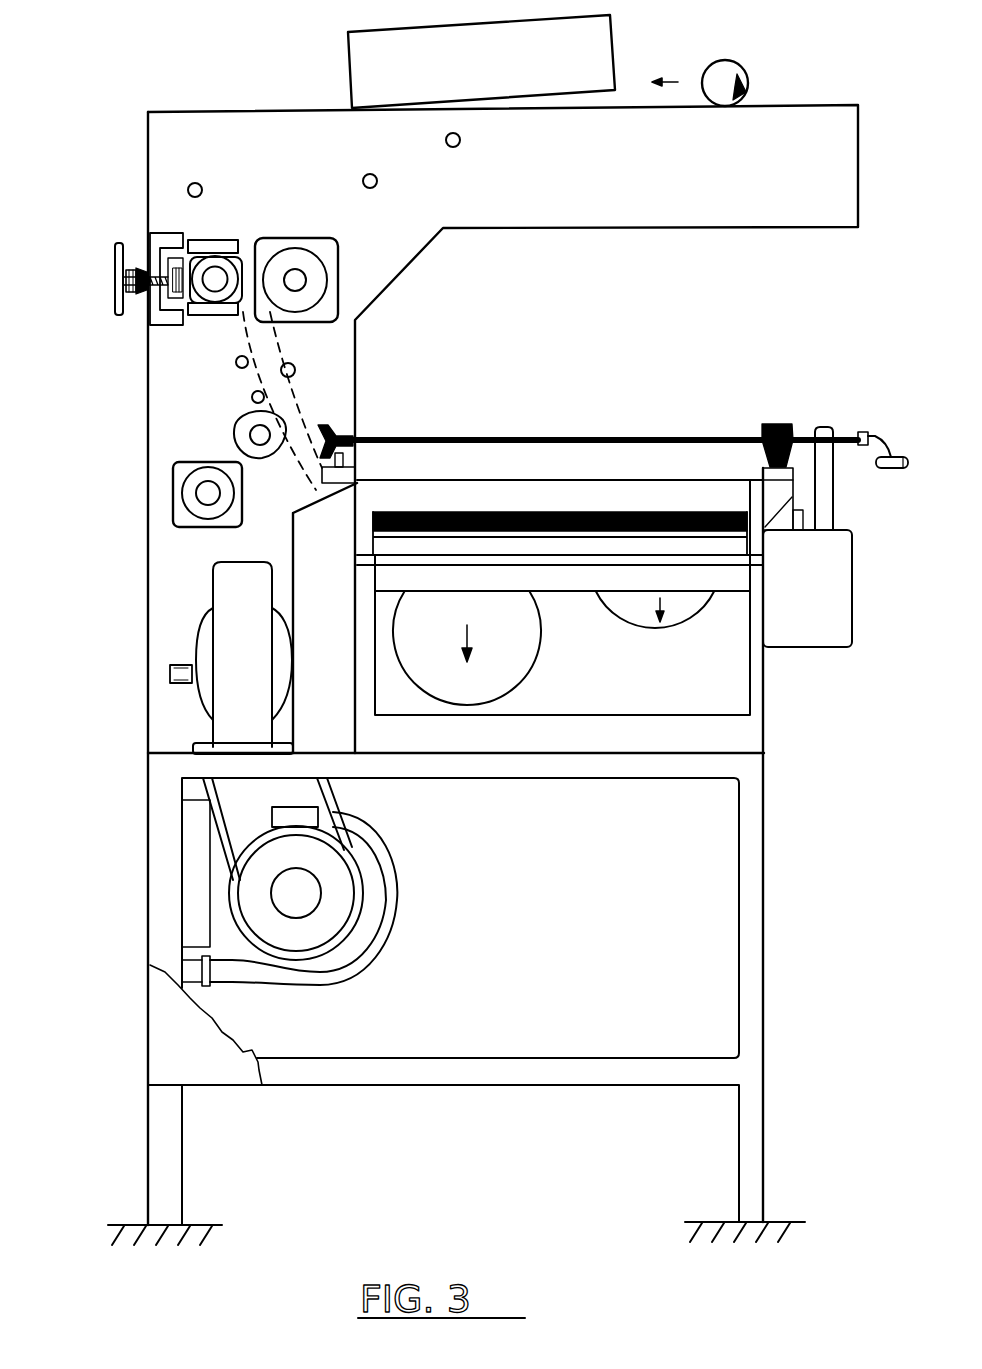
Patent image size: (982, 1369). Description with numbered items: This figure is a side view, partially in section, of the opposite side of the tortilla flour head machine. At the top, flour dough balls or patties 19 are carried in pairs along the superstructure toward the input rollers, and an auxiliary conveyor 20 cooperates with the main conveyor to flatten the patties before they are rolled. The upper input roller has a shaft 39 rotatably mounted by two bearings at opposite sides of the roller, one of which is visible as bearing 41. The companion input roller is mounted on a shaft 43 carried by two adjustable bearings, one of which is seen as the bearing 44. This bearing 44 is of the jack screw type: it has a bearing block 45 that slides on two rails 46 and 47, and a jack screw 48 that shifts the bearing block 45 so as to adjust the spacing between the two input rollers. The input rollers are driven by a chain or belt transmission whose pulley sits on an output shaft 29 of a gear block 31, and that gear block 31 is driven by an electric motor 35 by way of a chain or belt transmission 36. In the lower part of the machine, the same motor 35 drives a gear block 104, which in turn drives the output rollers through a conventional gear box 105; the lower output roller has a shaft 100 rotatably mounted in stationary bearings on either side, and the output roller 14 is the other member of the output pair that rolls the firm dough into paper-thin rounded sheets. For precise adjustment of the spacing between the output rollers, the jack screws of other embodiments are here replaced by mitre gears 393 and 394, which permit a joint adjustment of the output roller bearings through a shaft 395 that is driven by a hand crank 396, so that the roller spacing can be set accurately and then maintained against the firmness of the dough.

The auxiliary conveyor 20 is at (468, 30).
The flour dough balls or patties 19 is at (737, 63).
The jack screw 48 is at (132, 270).
The rail 46 is at (238, 240).
The bearing block 45 is at (198, 254).
The adjustable bearing 44 is at (240, 240).
The shaft 39 is at (302, 275).
The bearing 41 is at (333, 287).
The shaft 43 is at (203, 309).
The rail 47 is at (221, 317).
The output shaft 29 is at (207, 487).
The gear block 31 is at (232, 520).
The mitre gear 394 is at (343, 435).
The shaft 395 is at (607, 433).
The mitre gear 393 is at (773, 427).
The hand crank 396 is at (877, 430).
The output roller 14 is at (598, 512).
The gear box 105 is at (340, 607).
The shaft 100 is at (186, 662).
The gear block 104 is at (265, 655).
The chain or belt transmission 36 is at (333, 797).
The electric motor 35 is at (398, 881).